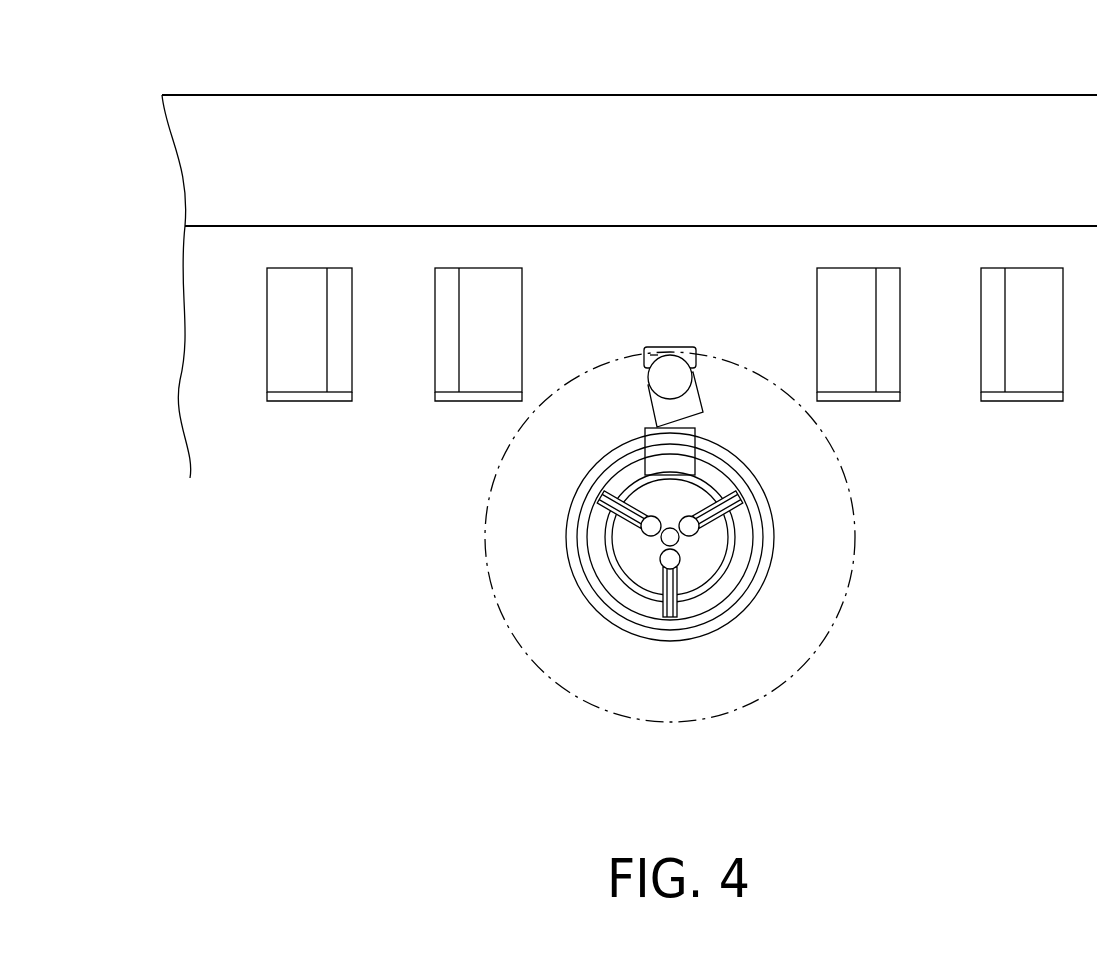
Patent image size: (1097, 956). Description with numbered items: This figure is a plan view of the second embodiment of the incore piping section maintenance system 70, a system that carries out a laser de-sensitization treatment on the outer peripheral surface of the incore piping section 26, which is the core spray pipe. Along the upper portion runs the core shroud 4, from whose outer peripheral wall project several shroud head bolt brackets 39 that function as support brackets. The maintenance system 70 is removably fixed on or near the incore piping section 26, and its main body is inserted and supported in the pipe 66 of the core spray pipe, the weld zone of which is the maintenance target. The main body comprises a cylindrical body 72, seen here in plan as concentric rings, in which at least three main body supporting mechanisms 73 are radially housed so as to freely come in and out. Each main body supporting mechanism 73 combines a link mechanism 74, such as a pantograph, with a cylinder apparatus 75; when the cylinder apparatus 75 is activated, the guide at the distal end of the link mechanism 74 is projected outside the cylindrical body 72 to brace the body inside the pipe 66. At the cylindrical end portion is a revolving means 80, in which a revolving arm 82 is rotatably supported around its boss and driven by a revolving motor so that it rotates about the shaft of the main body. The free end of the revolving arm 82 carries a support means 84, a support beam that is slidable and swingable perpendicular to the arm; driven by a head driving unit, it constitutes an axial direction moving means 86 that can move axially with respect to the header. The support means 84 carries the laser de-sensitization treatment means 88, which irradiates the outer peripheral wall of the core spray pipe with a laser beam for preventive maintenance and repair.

The core shroud 4 is at (560, 95).
The shroud head bolt bracket 39 is at (437, 403).
The axial direction moving means 86 is at (645, 340).
The support means 84 is at (672, 365).
The laser de-sensitization treatment means 88 is at (700, 385).
The revolving means 80 is at (760, 373).
The revolving arm 82 is at (697, 450).
The incore piping section maintenance system 70 is at (671, 575).
The incore piping section 26 is at (772, 575).
The cylindrical body 72 is at (582, 560).
The pipe 66 is at (690, 622).
The link mechanism 74 is at (732, 502).
The main body supporting mechanism 73 is at (597, 515).
The cylinder apparatus 75 is at (681, 562).